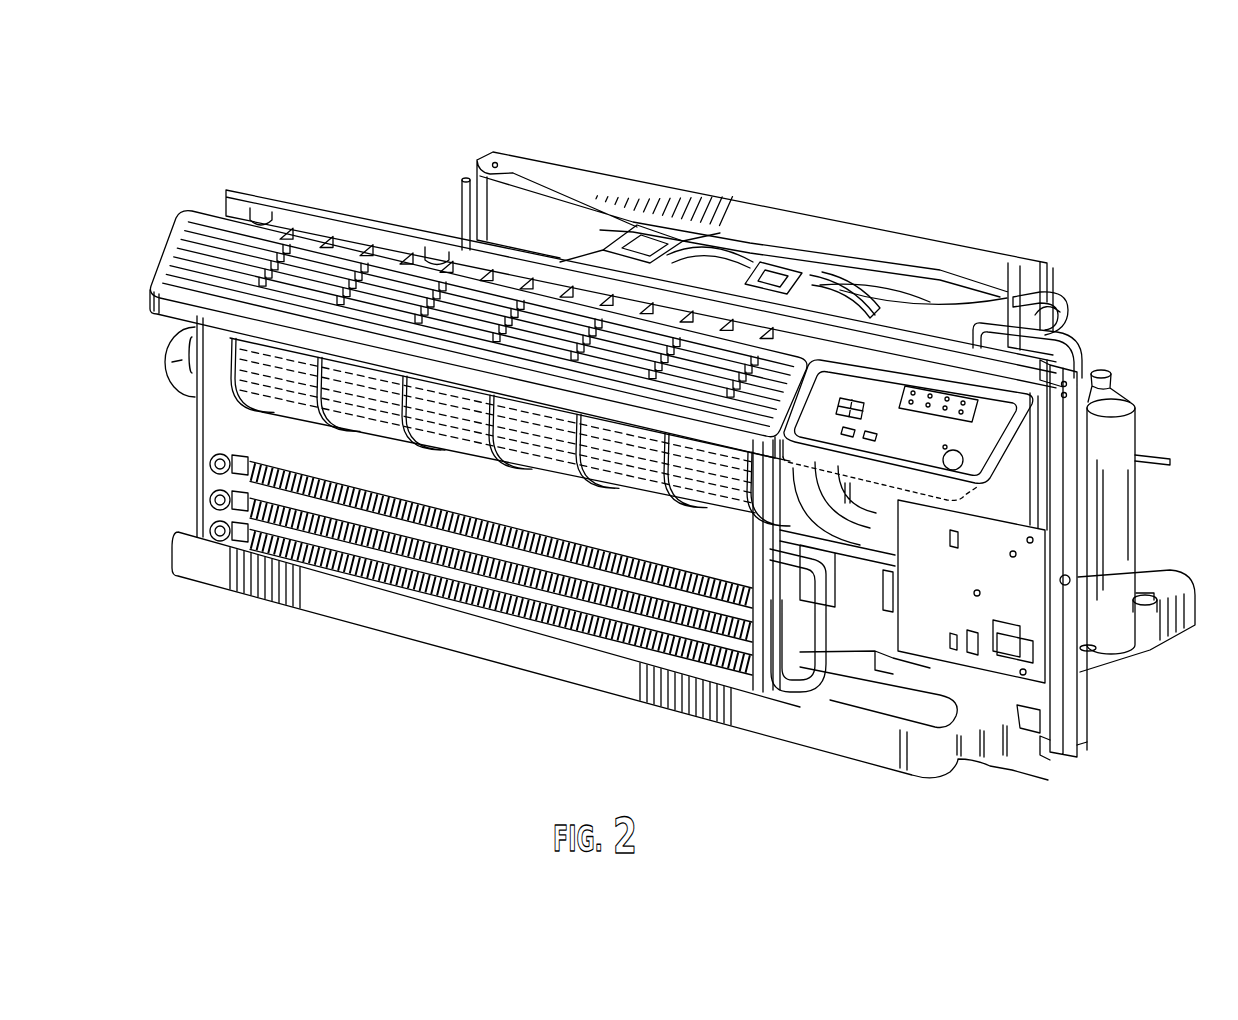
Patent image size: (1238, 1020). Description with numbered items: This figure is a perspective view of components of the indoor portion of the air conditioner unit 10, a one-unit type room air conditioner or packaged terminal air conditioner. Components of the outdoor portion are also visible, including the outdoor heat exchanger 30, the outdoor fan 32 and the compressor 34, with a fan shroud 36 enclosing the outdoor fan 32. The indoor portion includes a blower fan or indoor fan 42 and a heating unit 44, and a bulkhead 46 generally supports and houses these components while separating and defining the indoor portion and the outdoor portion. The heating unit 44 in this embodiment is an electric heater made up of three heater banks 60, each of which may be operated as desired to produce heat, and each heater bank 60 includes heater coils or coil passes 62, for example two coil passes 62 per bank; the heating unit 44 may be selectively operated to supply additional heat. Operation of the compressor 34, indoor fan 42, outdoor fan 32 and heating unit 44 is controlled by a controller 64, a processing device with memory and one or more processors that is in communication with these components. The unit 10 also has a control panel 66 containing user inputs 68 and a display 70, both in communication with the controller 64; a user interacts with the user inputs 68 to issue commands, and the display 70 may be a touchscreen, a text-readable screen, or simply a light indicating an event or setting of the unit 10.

The air conditioner unit 10 is at (334, 124).
The outdoor heat exchanger 30 is at (1047, 292).
The outdoor fan 32 is at (717, 273).
The compressor 34 is at (1122, 398).
The fan shroud 36 is at (562, 172).
The indoor fan 42 is at (262, 408).
The heating unit 44 is at (564, 640).
The bulkhead 46 is at (1087, 667).
The heater bank 60 is at (210, 463).
The heater coil 62 is at (397, 593).
The controller 64 is at (913, 500).
The control panel 66 is at (848, 383).
The user inputs 68 is at (873, 433).
The display 70 is at (975, 397).